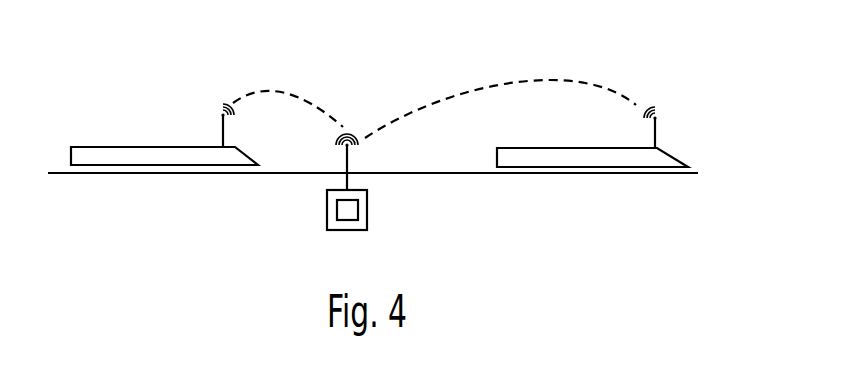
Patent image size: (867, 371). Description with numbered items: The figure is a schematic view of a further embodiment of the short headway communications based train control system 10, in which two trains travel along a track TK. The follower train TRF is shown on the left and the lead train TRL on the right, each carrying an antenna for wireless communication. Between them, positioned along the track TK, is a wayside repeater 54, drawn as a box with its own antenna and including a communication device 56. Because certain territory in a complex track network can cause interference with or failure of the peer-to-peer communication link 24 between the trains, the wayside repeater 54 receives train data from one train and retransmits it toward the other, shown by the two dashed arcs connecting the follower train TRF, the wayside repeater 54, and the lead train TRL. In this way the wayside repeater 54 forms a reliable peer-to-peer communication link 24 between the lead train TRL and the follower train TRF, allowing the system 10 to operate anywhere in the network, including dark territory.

The short headway communications based train control system 10 is at (164, 84).
The peer-to-peer communication link 24 is at (397, 97).
The wayside repeater 54 is at (331, 205).
The communication device 56 is at (240, 227).
The follower train TRF is at (165, 72).
The lead train TRL is at (623, 167).
The track TK is at (78, 173).